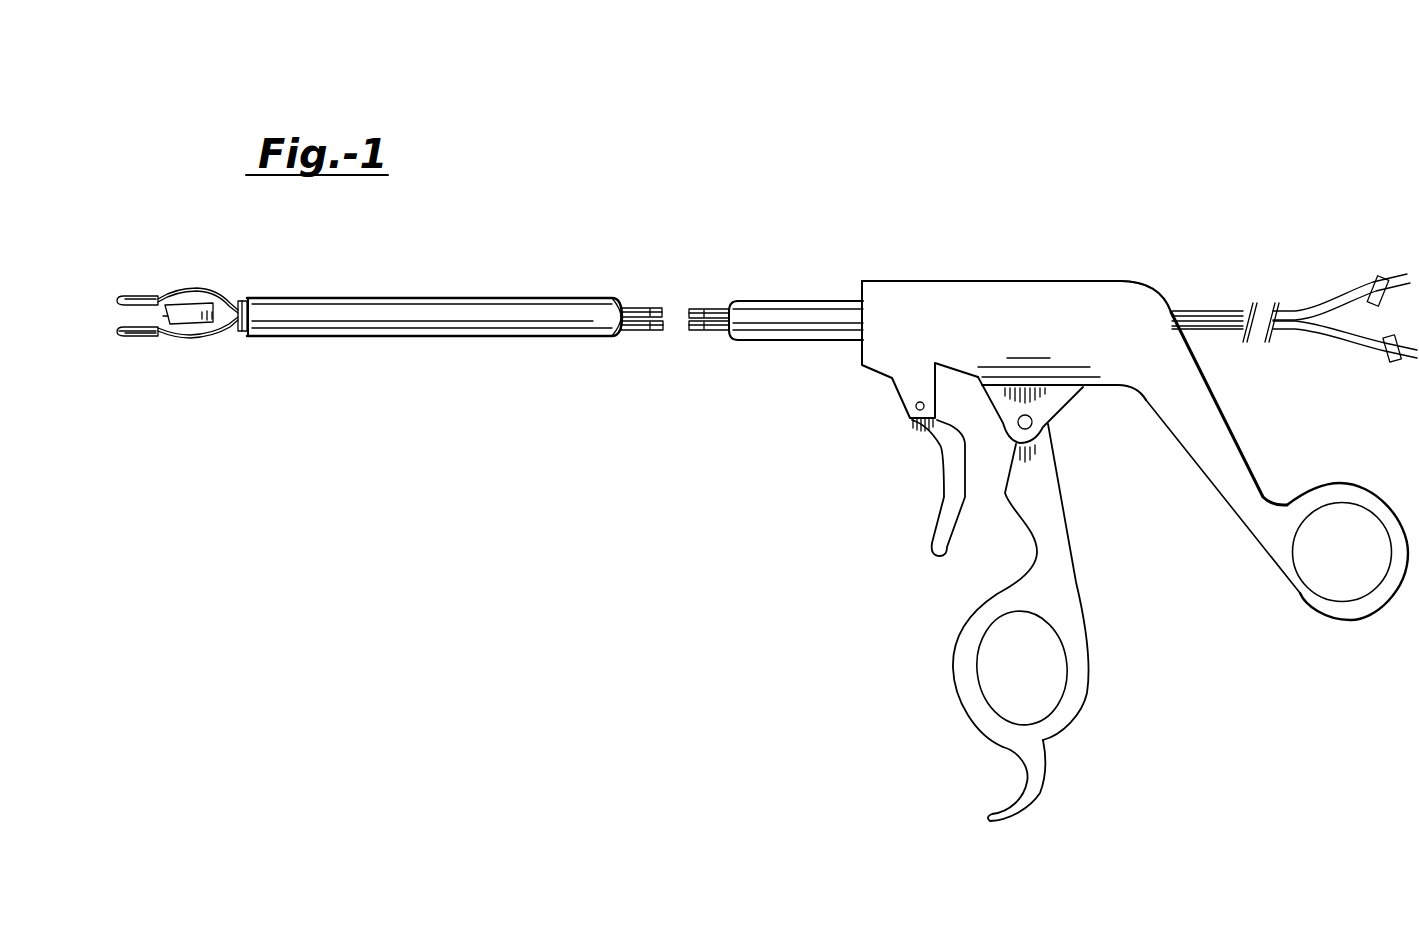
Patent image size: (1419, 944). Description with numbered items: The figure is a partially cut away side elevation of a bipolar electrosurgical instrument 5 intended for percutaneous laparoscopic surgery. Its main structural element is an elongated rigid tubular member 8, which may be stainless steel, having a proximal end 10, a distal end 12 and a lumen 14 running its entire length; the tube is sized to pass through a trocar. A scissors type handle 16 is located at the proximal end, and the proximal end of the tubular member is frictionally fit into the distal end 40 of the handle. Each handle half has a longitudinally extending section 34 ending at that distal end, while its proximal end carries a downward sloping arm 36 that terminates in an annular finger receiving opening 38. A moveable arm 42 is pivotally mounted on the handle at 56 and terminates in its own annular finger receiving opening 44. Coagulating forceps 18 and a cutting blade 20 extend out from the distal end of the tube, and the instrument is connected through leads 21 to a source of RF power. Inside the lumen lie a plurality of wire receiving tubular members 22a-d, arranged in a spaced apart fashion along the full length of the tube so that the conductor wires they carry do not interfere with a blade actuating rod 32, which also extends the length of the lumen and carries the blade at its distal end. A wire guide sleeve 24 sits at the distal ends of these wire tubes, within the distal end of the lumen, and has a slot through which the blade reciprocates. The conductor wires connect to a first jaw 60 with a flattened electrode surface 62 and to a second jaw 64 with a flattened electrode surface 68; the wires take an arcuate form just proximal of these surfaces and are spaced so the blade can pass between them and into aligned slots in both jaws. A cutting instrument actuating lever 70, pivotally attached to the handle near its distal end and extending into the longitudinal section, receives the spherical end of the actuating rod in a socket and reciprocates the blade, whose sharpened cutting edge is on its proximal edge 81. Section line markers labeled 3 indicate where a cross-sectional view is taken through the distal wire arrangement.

The electrosurgical instrument 5 is at (488, 203).
The section line 3- 3 is at (97, 315).
The elongated rigid tubular member 8 is at (370, 337).
The proximal end 10 is at (860, 300).
The distal end 12 is at (250, 337).
The lumen 14 is at (723, 334).
The scissors type handle 16 is at (1162, 275).
The coagulating forceps 18 is at (143, 350).
The cutting blade 20 is at (183, 310).
The leads 21 is at (1220, 311).
The wire receiving tubular members 22a-d is at (654, 292).
The wire guide sleeve 24 is at (240, 337).
The blade actuating rod 32 is at (652, 332).
The longitudinally extending section 34 is at (929, 281).
The downward sloping arm 36 is at (1235, 437).
The annular finger receiving opening 38 is at (1320, 615).
The distal end of the handle 40 is at (861, 290).
The moveable arm 42 is at (1072, 572).
The annular finger receiving opening 44 is at (1067, 727).
The pivot 56 is at (1032, 421).
The first jaw 60 is at (121, 297).
The flattened electrode surface 62 is at (124, 307).
The second jaw 64 is at (122, 323).
The flattened electrode surface 68 is at (118, 328).
The cutting instrument actuating lever 70 is at (927, 518).
The proximal edge 81 is at (163, 318).